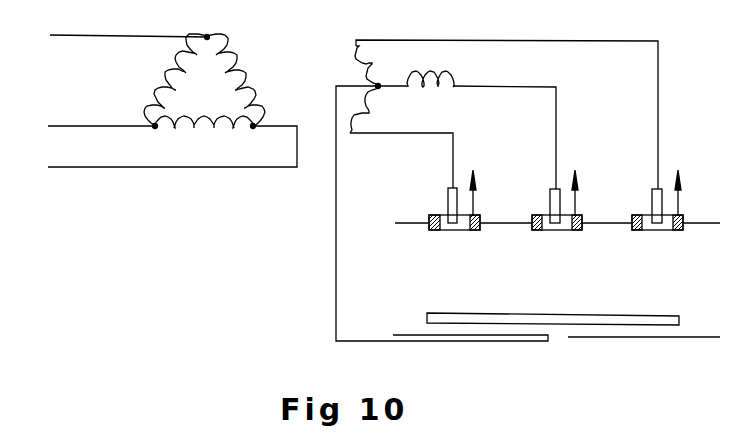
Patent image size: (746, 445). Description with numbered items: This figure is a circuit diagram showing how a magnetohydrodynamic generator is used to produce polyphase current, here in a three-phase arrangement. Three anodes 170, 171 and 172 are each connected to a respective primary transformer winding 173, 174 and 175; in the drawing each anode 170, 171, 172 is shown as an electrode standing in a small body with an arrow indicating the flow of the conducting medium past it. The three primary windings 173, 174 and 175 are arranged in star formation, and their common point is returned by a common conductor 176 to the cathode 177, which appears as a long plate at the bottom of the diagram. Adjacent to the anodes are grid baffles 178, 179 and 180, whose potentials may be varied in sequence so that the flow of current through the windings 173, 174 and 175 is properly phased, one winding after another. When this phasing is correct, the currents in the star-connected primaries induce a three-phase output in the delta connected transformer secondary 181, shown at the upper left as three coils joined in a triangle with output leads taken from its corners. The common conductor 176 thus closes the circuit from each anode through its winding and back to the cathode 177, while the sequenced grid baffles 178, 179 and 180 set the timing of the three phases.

The anode 170 is at (448, 199).
The anode 171 is at (549, 196).
The anode 172 is at (652, 196).
The primary transformer winding 173 is at (366, 102).
The primary transformer winding 174 is at (440, 80).
The primary transformer winding 175 is at (363, 58).
The common conductor 176 is at (336, 215).
The cathode 177 is at (548, 315).
The grid baffle 178 is at (475, 229).
The grid baffle 179 is at (573, 230).
The grid baffle 180 is at (674, 230).
The delta connected transformer secondary 181 is at (181, 48).